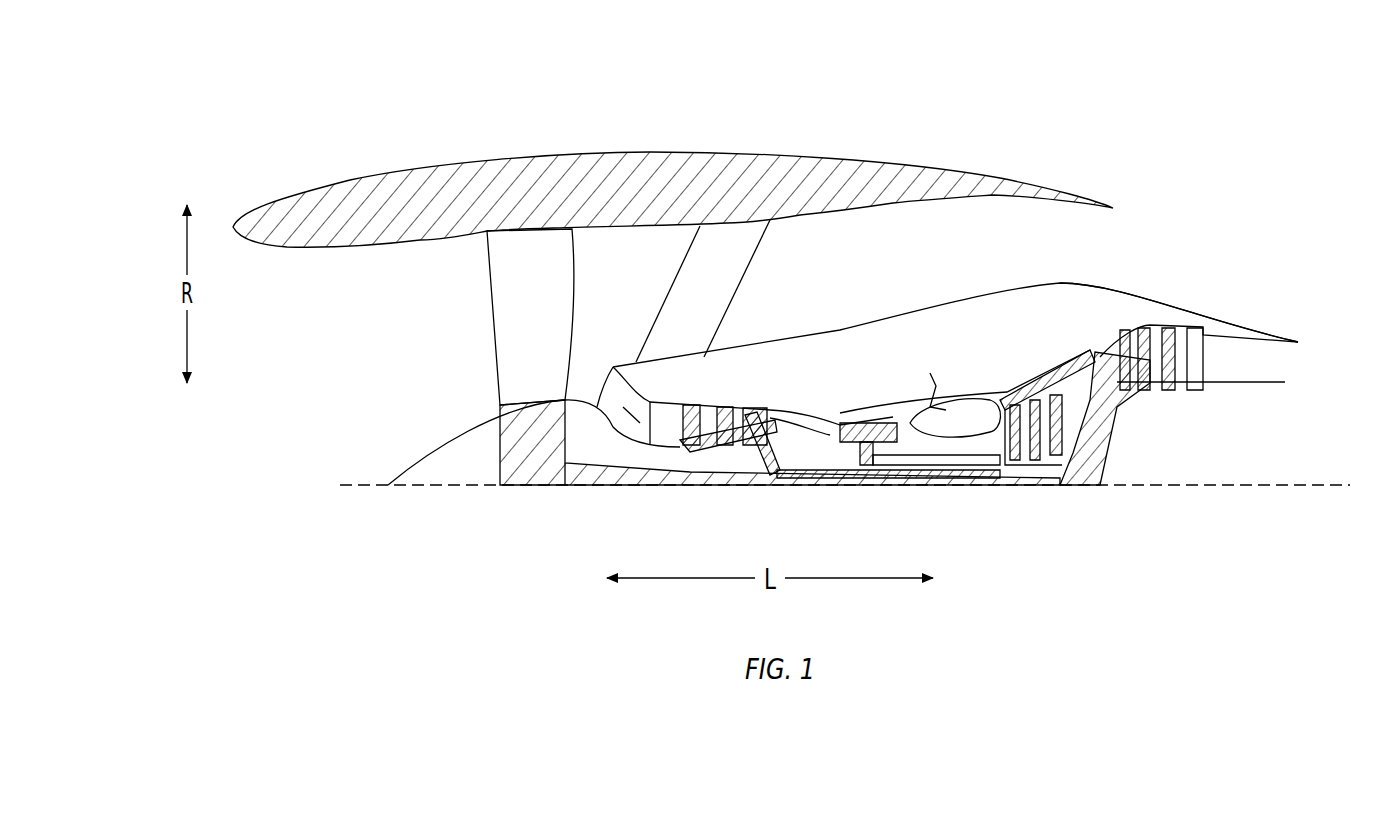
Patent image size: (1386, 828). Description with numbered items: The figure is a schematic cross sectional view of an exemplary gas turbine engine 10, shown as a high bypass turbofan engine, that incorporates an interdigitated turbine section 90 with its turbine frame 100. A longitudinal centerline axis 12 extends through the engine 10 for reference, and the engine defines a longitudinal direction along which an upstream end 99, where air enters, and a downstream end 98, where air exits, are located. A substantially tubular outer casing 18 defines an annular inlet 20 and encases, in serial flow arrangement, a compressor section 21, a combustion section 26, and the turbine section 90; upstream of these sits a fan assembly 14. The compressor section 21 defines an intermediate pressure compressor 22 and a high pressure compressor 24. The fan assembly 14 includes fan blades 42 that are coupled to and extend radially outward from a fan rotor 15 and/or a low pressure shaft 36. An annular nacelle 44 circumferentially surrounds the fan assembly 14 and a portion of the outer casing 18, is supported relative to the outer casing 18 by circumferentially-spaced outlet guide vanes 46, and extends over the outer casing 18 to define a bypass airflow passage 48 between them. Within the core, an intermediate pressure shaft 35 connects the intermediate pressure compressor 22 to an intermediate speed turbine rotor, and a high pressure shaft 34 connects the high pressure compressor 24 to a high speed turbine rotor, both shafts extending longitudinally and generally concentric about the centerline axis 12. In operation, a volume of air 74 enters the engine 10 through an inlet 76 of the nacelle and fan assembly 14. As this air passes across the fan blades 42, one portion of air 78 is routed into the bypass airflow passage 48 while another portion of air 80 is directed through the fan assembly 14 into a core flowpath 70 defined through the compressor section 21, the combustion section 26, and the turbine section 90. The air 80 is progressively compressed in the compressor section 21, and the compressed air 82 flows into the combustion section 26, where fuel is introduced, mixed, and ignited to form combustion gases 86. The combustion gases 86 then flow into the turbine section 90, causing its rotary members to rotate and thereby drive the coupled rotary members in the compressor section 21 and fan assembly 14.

The gas turbine engine 10 is at (1192, 112).
The longitudinal centerline axis 12 is at (1305, 474).
The fan assembly 14 is at (470, 345).
The fan rotor 15 is at (503, 436).
The outer casing 18 is at (870, 347).
The annular inlet 20 is at (603, 375).
The compressor section 21 is at (775, 385).
The intermediate pressure compressor 22 is at (690, 405).
The high pressure compressor 24 is at (845, 410).
The combustion section 26 is at (965, 380).
The high pressure shaft 34 is at (855, 457).
The intermediate pressure shaft 35 is at (760, 460).
The low pressure shaft 36 is at (598, 483).
The fan blades 42 is at (495, 282).
The nacelle 44 is at (447, 178).
The outlet guide vanes 46 is at (712, 308).
The bypass airflow passage 48 is at (820, 285).
The core flowpath 70 is at (640, 410).
The volume of air 74 is at (352, 381).
The inlet 76 is at (342, 310).
The bypass air 78 is at (645, 300).
The core air 80 is at (573, 383).
The compressed air 82 is at (780, 422).
The combustion gases 86 is at (1210, 362).
The turbine section 90 is at (1122, 300).
The downstream end 98 is at (1357, 375).
The upstream end 99 is at (207, 465).
The turbine frame 100 is at (1010, 395).